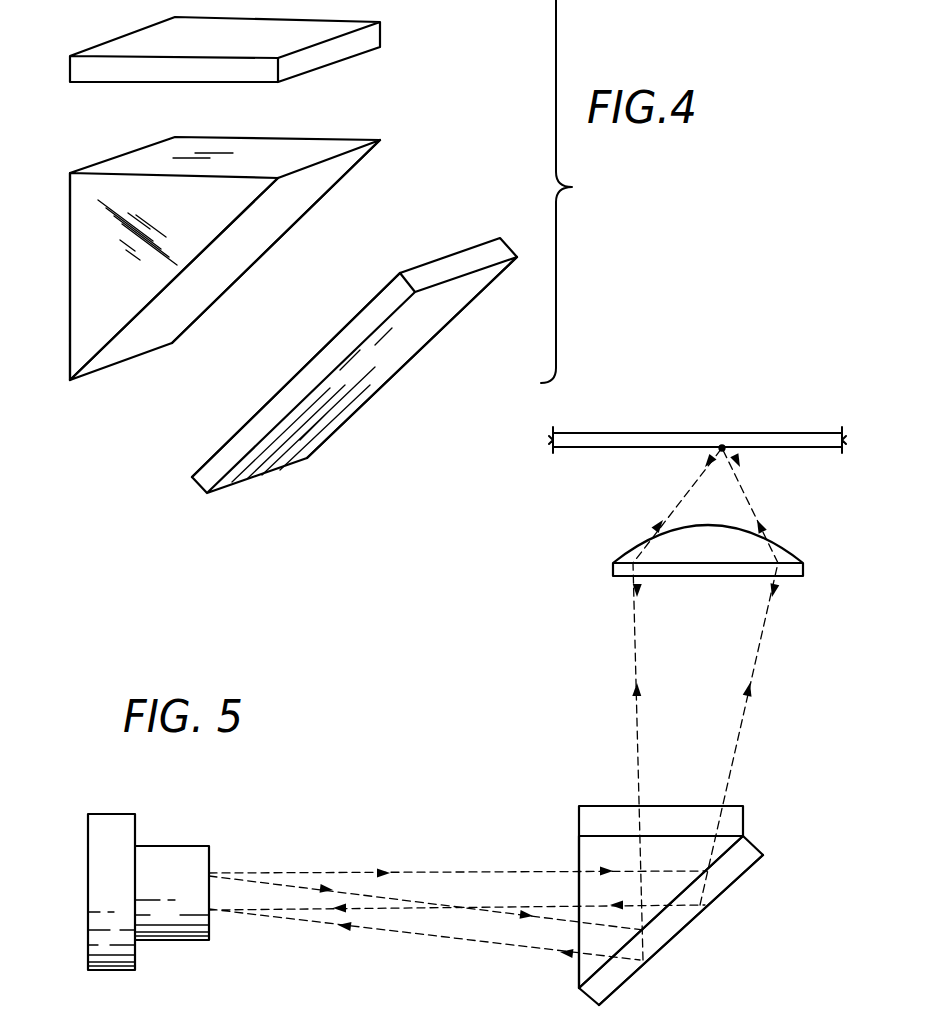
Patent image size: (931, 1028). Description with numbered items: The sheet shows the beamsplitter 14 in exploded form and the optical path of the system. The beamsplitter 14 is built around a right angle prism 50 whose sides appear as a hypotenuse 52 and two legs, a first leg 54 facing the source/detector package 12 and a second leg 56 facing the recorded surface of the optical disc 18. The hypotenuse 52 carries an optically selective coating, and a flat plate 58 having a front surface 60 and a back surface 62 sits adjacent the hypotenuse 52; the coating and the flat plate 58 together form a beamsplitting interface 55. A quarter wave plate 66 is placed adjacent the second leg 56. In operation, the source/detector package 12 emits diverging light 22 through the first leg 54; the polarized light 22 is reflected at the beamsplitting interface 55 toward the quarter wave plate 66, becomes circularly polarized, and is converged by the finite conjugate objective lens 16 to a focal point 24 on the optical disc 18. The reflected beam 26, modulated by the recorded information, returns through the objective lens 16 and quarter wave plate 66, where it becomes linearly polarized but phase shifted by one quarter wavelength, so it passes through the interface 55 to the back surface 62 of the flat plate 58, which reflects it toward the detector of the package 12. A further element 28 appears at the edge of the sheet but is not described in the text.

In FIG. 5, the source/detector package 12 is at (113, 815).
In FIG. 4, the beamsplitter 14 is at (582, 191).
In FIG. 5, the finite conjugate objective lens 16 is at (783, 556).
In FIG. 5, the optical disc 18 is at (796, 433).
In FIG. 5, the diverging light 22 is at (760, 656).
In FIG. 5, the point 24 is at (722, 446).
In FIG. 5, the reflected beam 26 is at (632, 645).
In FIG. 5, the detector 28 is at (269, 1023).
In FIG. 4, the right angle prism 50 is at (116, 236).
In FIG. 4, the hypotenuse 52 is at (213, 288).
In FIG. 5, the hypotenuse 52 is at (597, 967).
In FIG. 4, the first leg 54 is at (68, 330).
In FIG. 5, the first leg 54 is at (578, 853).
In FIG. 4, the beamsplitting interface 55 is at (300, 213).
In FIG. 5, the beamsplitting interface 55 is at (745, 838).
In FIG. 4, the second leg 56 is at (258, 148).
In FIG. 5, the second leg 56 is at (745, 822).
In FIG. 4, the flat plate 58 is at (258, 430).
In FIG. 5, the flat plate 58 is at (612, 981).
In FIG. 4, the front surface 60 is at (307, 363).
In FIG. 4, the back surface 62 is at (407, 352).
In FIG. 5, the back surface 62 is at (668, 935).
In FIG. 4, the quarter wave plate 66 is at (147, 35).
In FIG. 5, the quarter wave plate 66 is at (598, 810).